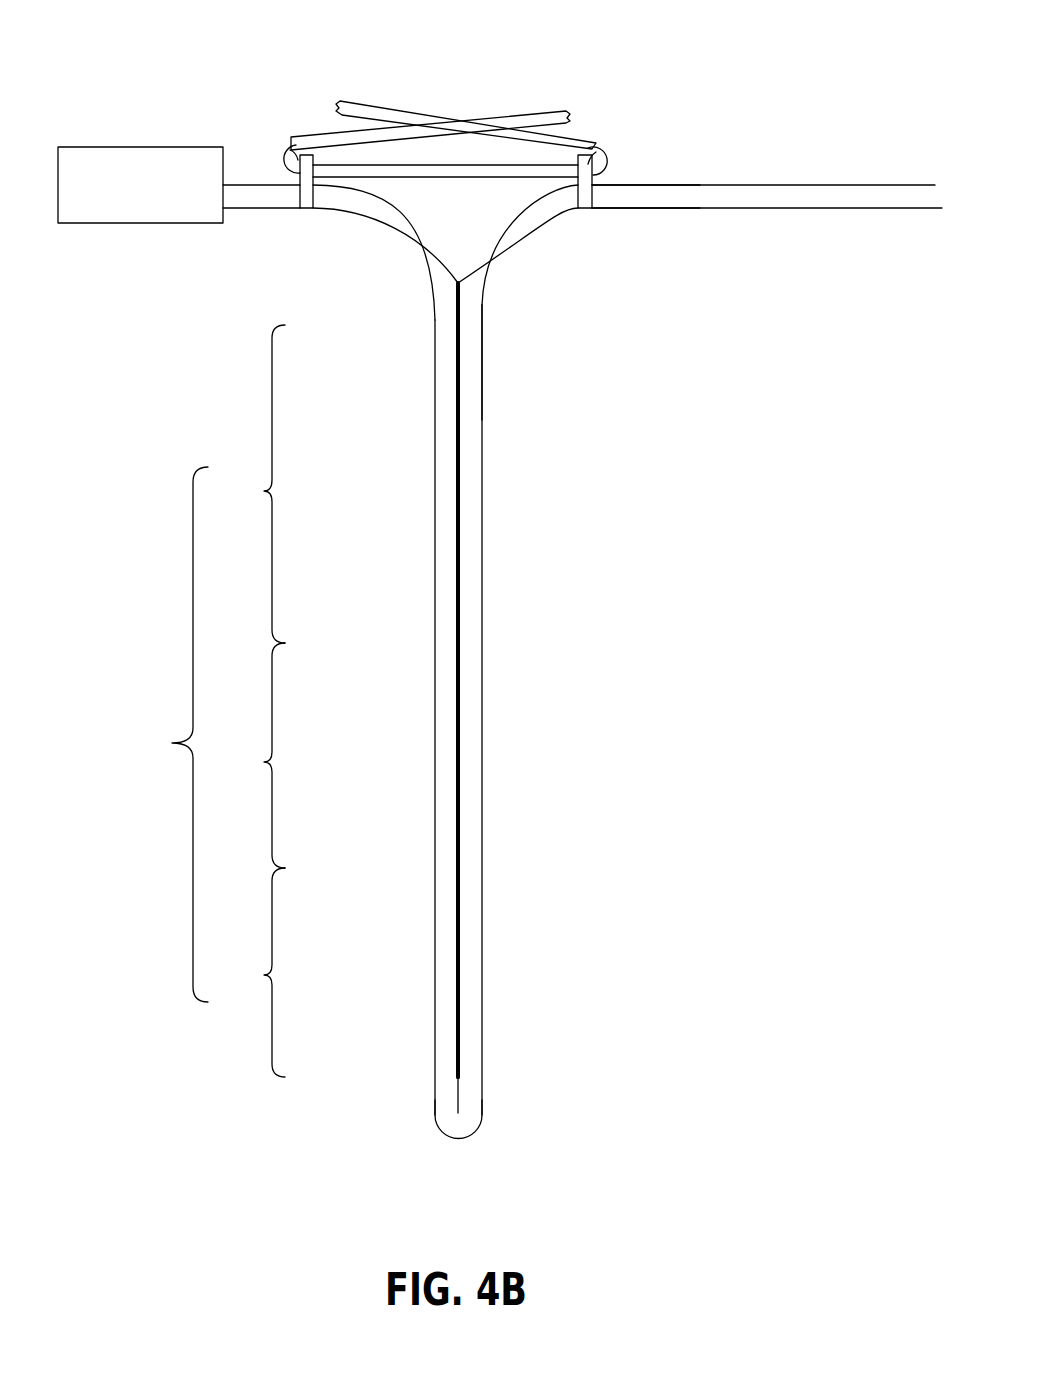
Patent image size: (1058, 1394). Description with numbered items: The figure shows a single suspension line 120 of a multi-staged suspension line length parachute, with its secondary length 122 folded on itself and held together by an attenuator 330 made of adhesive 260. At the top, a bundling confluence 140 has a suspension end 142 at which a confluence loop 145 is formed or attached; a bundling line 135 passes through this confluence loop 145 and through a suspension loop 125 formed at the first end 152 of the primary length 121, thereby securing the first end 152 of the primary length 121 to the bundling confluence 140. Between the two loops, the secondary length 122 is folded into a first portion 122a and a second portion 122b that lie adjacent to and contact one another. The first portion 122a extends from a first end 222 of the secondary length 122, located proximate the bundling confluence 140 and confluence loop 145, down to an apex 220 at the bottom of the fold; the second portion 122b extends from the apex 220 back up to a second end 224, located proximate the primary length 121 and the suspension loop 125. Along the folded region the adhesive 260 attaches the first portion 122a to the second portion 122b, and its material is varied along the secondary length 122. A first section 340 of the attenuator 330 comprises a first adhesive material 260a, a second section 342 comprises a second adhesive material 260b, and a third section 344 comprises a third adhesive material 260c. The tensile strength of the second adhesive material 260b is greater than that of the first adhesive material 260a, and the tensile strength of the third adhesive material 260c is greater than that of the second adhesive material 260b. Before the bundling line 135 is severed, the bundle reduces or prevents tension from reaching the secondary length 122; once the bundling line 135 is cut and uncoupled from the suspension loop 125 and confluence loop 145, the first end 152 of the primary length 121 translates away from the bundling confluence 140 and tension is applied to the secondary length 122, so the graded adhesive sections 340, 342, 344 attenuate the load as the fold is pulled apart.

The suspension line 120 is at (578, 82).
The primary length 121 is at (742, 197).
The secondary length 122 is at (577, 268).
The first portion of secondary length 122a is at (442, 305).
The second portion of secondary length 122b is at (480, 282).
The suspension loop 125 is at (603, 146).
The bundling line 135 is at (433, 170).
The bundling confluence 140 is at (218, 117).
The suspension end 142 is at (273, 198).
The confluence loop 145 is at (291, 142).
The first end of primary length 152 is at (613, 197).
The apex 220 is at (455, 1140).
The first end of secondary length 222 is at (332, 203).
The second end of secondary length 224 is at (570, 203).
The adhesive 260 is at (433, 366).
The first adhesive material 260a is at (462, 428).
The second adhesive material 260b is at (462, 717).
The third adhesive material 260c is at (462, 944).
The attenuator 330 is at (166, 734).
The first section 340 is at (263, 491).
The second section 342 is at (263, 762).
The third section 344 is at (263, 975).